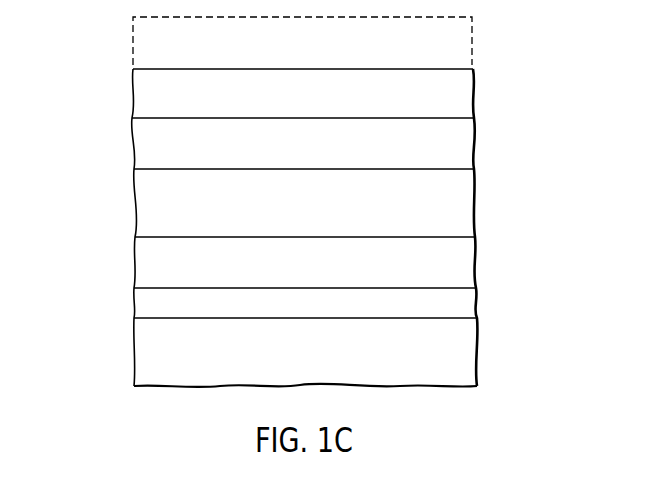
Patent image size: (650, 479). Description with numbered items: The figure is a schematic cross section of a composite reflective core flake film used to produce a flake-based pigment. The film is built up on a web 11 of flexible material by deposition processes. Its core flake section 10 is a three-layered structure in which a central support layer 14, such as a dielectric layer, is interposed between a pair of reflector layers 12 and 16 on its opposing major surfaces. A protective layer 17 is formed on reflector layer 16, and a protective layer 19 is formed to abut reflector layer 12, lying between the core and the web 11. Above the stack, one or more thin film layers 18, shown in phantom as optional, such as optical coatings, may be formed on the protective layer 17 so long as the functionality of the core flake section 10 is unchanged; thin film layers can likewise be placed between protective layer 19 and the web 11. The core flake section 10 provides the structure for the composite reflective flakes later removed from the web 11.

The core flake section 10 is at (245, 208).
The web 11 is at (150, 356).
The reflector layer 12 is at (275, 269).
The central support layer 14 is at (153, 203).
The reflector layer 16 is at (150, 146).
The protective layer 17 is at (152, 89).
The thin film layers 18 is at (133, 34).
The protective layer 19 is at (148, 306).